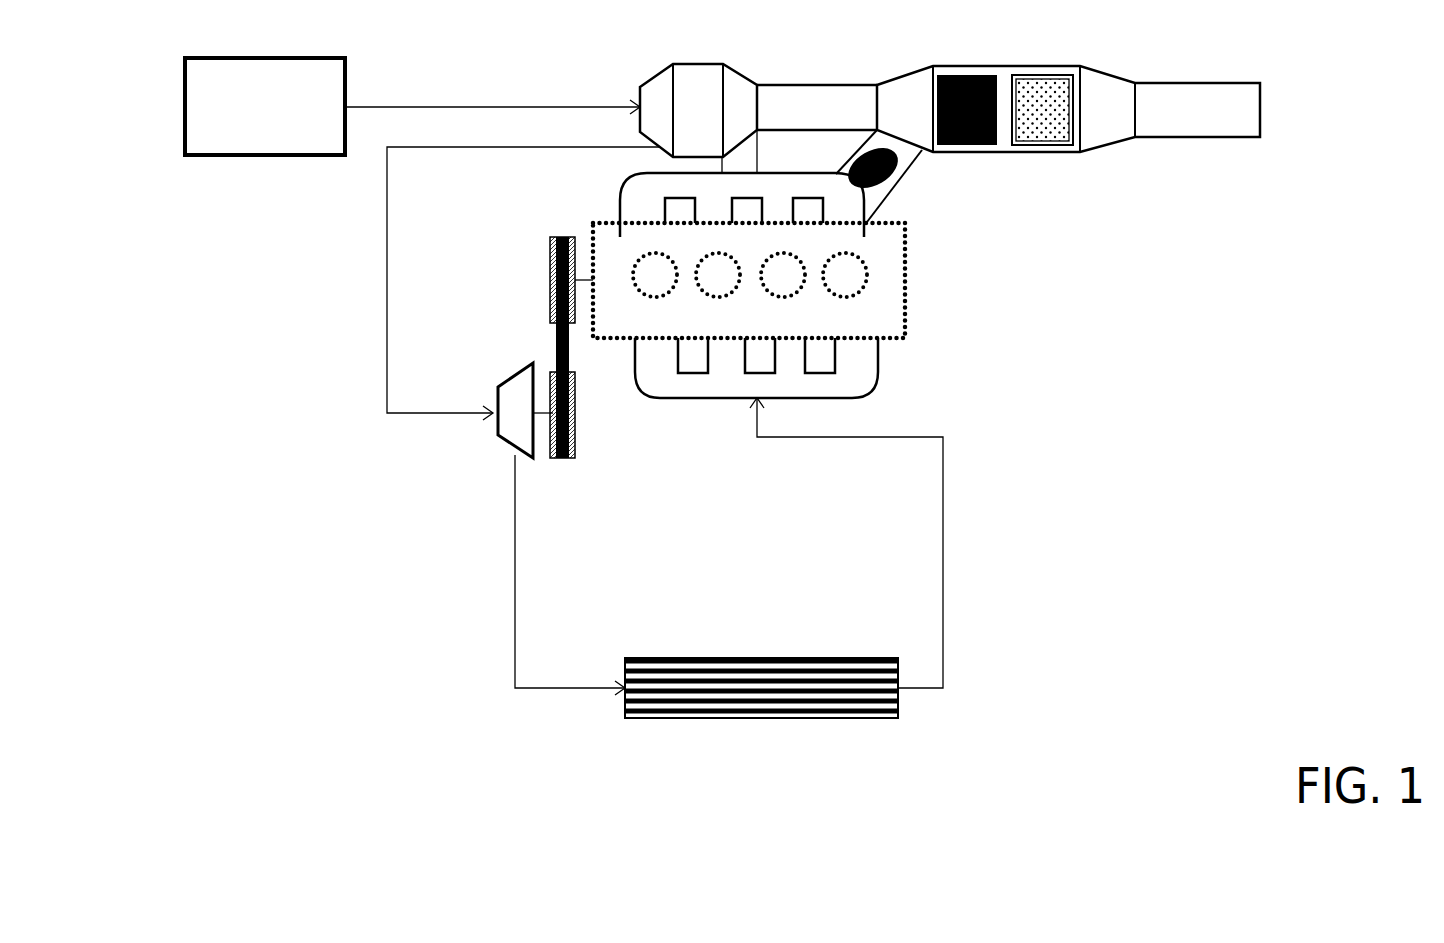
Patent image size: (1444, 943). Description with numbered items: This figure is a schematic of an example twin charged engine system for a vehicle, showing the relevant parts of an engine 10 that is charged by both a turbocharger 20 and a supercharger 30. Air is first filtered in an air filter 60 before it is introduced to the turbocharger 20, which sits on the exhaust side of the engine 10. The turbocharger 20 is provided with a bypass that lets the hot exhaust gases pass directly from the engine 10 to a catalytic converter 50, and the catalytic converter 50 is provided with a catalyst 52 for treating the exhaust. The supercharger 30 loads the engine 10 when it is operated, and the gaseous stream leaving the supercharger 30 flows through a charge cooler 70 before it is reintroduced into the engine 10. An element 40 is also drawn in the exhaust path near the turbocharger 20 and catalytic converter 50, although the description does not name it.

The engine 10 is at (880, 320).
The turbocharger 20 is at (733, 98).
The supercharger 30 is at (515, 403).
The exhaust sensor 40 is at (893, 186).
The catalytic converter 50 is at (973, 143).
The catalyst 52 is at (1025, 145).
The air filter 60 is at (243, 130).
The charge cooler 70 is at (650, 680).